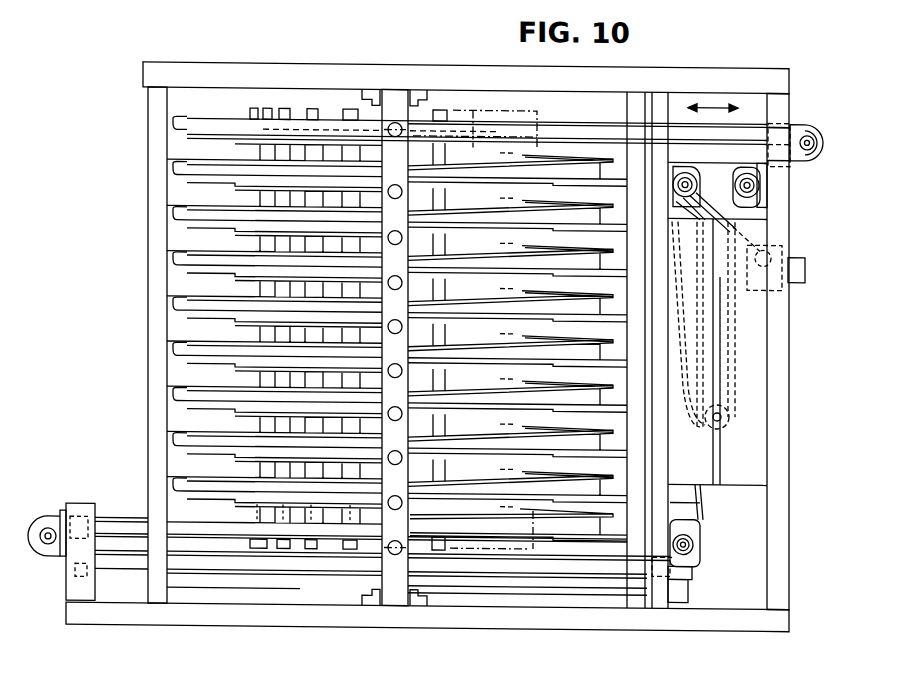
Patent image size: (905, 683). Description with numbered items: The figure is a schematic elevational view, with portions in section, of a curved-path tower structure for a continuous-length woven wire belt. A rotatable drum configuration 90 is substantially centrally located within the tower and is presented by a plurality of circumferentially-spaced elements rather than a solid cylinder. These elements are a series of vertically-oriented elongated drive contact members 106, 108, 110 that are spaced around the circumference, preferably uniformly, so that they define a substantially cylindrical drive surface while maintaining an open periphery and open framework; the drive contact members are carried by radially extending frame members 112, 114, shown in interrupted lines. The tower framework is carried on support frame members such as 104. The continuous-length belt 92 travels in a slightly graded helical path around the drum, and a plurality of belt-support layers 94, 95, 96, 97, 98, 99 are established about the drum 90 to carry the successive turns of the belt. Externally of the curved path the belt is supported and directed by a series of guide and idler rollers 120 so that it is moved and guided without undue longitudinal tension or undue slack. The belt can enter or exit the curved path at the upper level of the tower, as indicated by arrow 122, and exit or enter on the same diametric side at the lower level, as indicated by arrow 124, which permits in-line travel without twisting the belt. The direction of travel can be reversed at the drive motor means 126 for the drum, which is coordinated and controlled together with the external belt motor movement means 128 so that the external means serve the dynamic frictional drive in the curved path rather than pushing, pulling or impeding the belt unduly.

The support frame member 104 is at (146, 102).
The belt-support layer 94 is at (180, 118).
The belt-support layer 95 is at (180, 162).
The belt-support layer 96 is at (180, 208).
The rotatable drum configuration 90 is at (178, 298).
The belt-support layer 97 is at (178, 388).
The belt-support layer 98 is at (178, 433).
The belt-support layer 99 is at (178, 478).
The continuous-length belt 92 is at (228, 116).
The drive contact member 106 is at (254, 107).
The drive contact member 108 is at (276, 107).
The drive contact member 110 is at (305, 107).
The radially extending frame member 112 is at (473, 107).
The radially extending frame member 114 is at (333, 513).
The guide and/or idler rollers 120 is at (746, 161).
The arrow 122 is at (700, 102).
The arrow 124 is at (141, 502).
The drive motor means 126 is at (692, 570).
The external belt motor movement means 128 is at (714, 193).